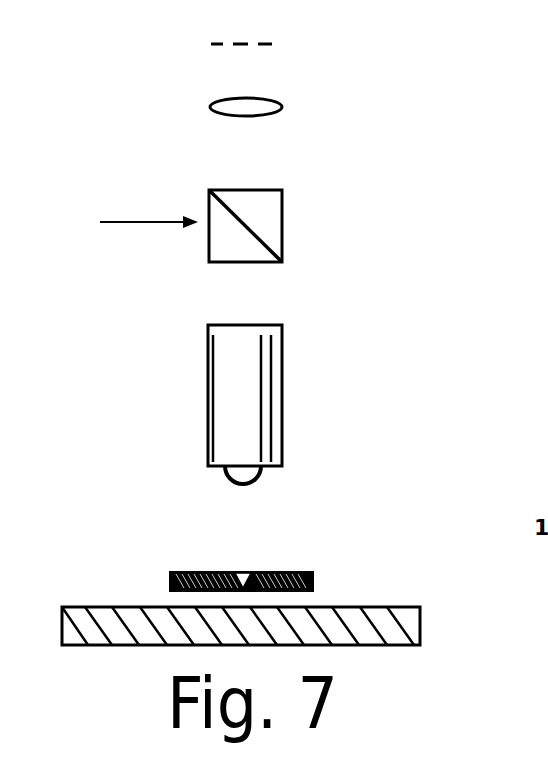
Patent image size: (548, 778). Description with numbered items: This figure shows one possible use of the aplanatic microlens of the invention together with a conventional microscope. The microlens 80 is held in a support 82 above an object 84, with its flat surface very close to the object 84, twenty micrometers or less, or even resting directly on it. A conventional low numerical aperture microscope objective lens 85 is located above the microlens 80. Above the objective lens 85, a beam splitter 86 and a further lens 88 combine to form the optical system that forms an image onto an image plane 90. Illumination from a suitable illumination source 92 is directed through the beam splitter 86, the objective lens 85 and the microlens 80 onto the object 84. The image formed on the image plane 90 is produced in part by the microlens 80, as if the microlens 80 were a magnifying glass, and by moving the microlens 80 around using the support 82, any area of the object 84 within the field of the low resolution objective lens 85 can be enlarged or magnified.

The microlens 80 is at (243, 573).
The support 82 is at (313, 576).
The object 84 is at (421, 620).
The microscope objective lens 85 is at (283, 382).
The beam splitter 86 is at (283, 218).
The further lens 88 is at (283, 106).
The image plane 90 is at (278, 45).
The illumination source 92 is at (95, 232).